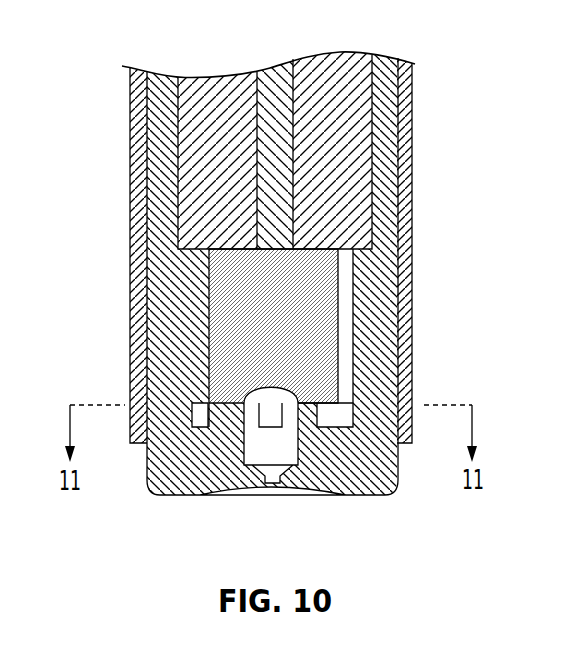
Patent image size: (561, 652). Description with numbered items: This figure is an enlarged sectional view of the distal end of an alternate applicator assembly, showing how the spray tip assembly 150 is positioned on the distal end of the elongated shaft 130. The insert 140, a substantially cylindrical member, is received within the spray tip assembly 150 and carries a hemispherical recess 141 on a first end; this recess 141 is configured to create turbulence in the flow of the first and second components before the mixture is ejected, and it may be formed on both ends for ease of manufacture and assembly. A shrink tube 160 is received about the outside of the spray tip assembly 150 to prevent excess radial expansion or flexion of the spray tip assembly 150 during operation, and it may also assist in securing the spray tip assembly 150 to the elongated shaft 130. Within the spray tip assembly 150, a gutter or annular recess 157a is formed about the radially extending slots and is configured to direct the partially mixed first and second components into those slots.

The elongated shaft 130 is at (340, 72).
The shrink tube 160 is at (412, 158).
The insert 140 is at (245, 313).
The hemispherical recess 141 is at (293, 396).
The spray tip assembly 150 is at (398, 476).
The gutter or annular recess 157a is at (192, 407).